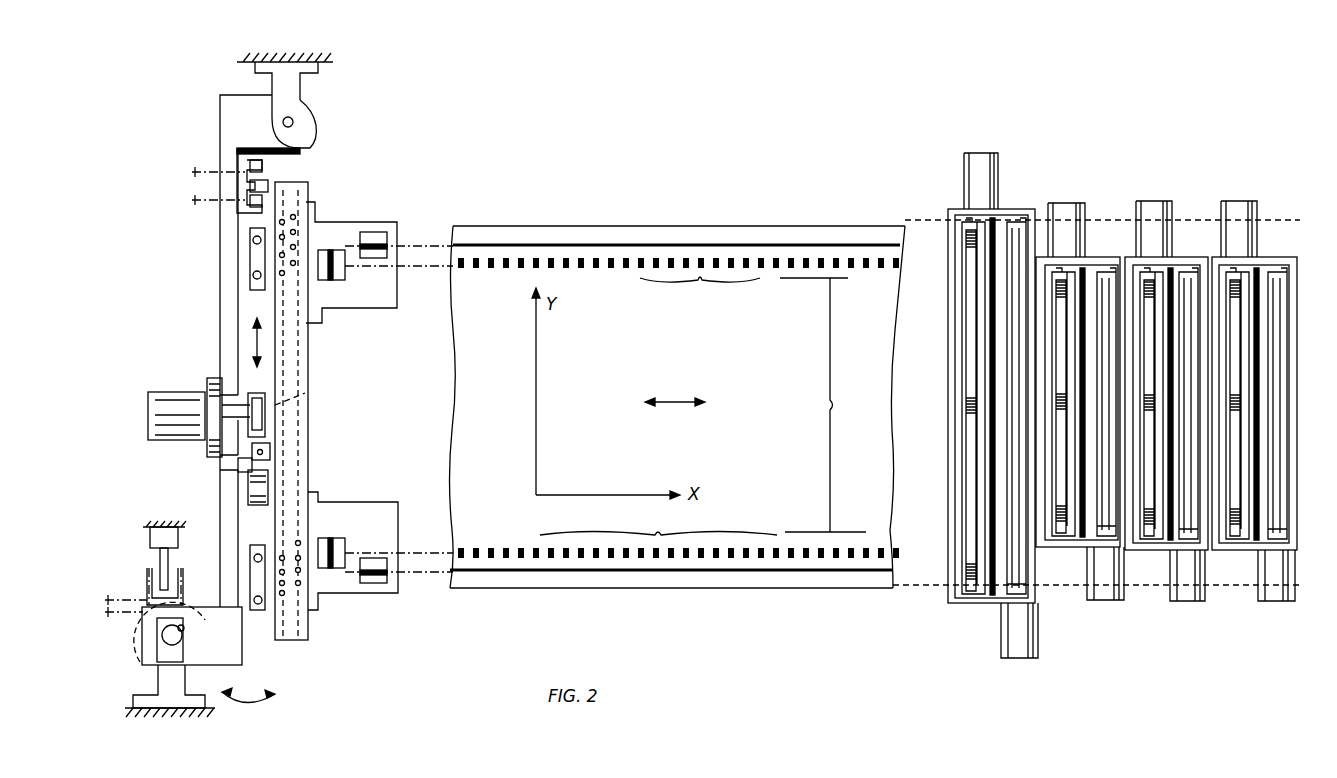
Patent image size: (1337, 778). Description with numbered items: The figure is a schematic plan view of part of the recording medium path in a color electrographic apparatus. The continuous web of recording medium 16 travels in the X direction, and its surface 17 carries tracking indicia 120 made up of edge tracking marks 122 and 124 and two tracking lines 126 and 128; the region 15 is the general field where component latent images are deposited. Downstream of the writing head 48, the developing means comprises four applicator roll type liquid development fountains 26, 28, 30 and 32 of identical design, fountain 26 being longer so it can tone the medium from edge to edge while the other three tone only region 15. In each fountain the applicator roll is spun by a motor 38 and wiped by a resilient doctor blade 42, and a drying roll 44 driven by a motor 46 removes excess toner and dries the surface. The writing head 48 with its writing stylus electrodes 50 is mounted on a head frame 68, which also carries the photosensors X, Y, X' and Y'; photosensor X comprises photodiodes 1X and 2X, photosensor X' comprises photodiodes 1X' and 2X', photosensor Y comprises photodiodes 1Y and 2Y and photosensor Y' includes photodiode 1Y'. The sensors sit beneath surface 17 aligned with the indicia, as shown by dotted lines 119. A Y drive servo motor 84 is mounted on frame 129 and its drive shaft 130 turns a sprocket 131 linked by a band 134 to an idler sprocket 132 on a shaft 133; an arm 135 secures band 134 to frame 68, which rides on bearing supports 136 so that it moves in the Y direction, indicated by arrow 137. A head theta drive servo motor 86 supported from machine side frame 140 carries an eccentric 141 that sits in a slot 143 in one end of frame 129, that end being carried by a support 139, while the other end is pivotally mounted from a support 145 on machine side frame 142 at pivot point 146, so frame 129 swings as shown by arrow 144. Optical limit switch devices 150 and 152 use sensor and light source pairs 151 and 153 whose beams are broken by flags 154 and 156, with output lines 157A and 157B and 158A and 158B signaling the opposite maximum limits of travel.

The machine side frame 142 is at (332, 58).
The support 145 is at (305, 90).
The pivot point 146 is at (305, 122).
The optical limit switch device 150 is at (305, 160).
The optical sensor and light source pair 151 is at (256, 160).
The output line 157B is at (207, 170).
The output line 157A is at (207, 200).
The optical sensor and light source pair 153 is at (250, 206).
The flag 154 is at (268, 186).
The bearing supports 136 is at (250, 262).
The writing head 48 is at (305, 641).
The writing stylus electrodes 50 is at (293, 266).
The arrow 137 is at (250, 343).
The Y drive servo motor 84 is at (148, 400).
The drive shaft 130 is at (220, 386).
The sprocket 131 is at (305, 393).
The arm 135 is at (265, 426).
The band 134 is at (270, 452).
The shaft 133 is at (240, 476).
The idler sprocket 132 is at (268, 486).
The frame 129 is at (222, 505).
The optical limit switch device 152 is at (148, 524).
The flag 156 is at (178, 541).
The output line 158A is at (140, 598).
The output line 158B is at (143, 614).
The head theta drive servo motor 86 is at (150, 660).
The eccentric 141 is at (170, 636).
The slot 143 is at (205, 629).
The support 139 is at (158, 686).
The machine side frame 140 is at (183, 718).
The arrow 144 is at (262, 700).
The head frame 68 is at (380, 310).
The photodiode 1X' is at (328, 278).
The photodiode 1Y' is at (394, 245).
The photosensor X' is at (337, 220).
The photosensor Y' is at (381, 206).
The photodiode 2X' is at (352, 307).
The photodiode 1X is at (327, 587).
The photodiode 1Y is at (373, 590).
The photosensor X is at (348, 594).
The photosensor Y is at (392, 596).
The photodiode 2X is at (351, 531).
The photodiode 2Y is at (372, 558).
The dotted lines 119 is at (443, 245).
The recording medium 16 is at (678, 407).
The tracking line 128 is at (510, 245).
The surface of medium 17 is at (582, 278).
The tracking indicia 120 is at (500, 270).
The edge tracking marks 124 is at (700, 290).
The edge tracking marks 122 is at (658, 519).
The region 15 is at (823, 405).
The tracking line 126 is at (690, 573).
The liquid development fountain 26 is at (962, 606).
The liquid development fountain 28 is at (1080, 552).
The liquid development fountain 30 is at (1170, 554).
The liquid development fountain 32 is at (1255, 554).
The motor 38 is at (988, 185).
The motor 46 is at (1022, 648).
The resilient doctor blade 42 is at (975, 232).
The drying roll 44 is at (1015, 232).